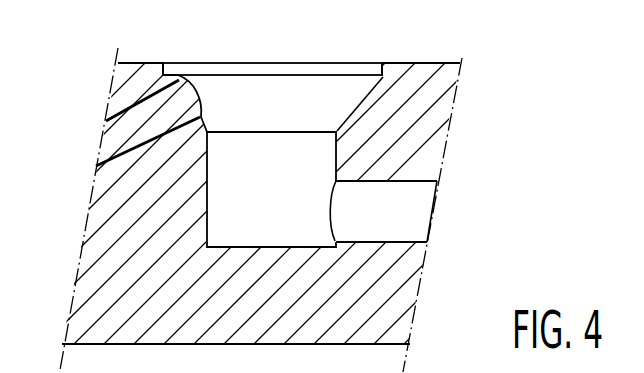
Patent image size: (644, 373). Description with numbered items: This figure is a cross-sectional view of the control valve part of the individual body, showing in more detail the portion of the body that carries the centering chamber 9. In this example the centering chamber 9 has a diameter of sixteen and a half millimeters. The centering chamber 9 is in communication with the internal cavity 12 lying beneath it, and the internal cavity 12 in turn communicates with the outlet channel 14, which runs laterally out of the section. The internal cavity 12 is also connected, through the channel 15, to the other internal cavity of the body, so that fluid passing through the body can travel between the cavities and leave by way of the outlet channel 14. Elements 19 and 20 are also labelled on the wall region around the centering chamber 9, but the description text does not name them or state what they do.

The centering chamber 9 is at (319, 70).
The plate edge 19 is at (383, 66).
The curved flank surface 20 is at (175, 78).
The channel 15 is at (133, 128).
The internal cavity 12 is at (233, 182).
The outlet channel 14 is at (402, 215).